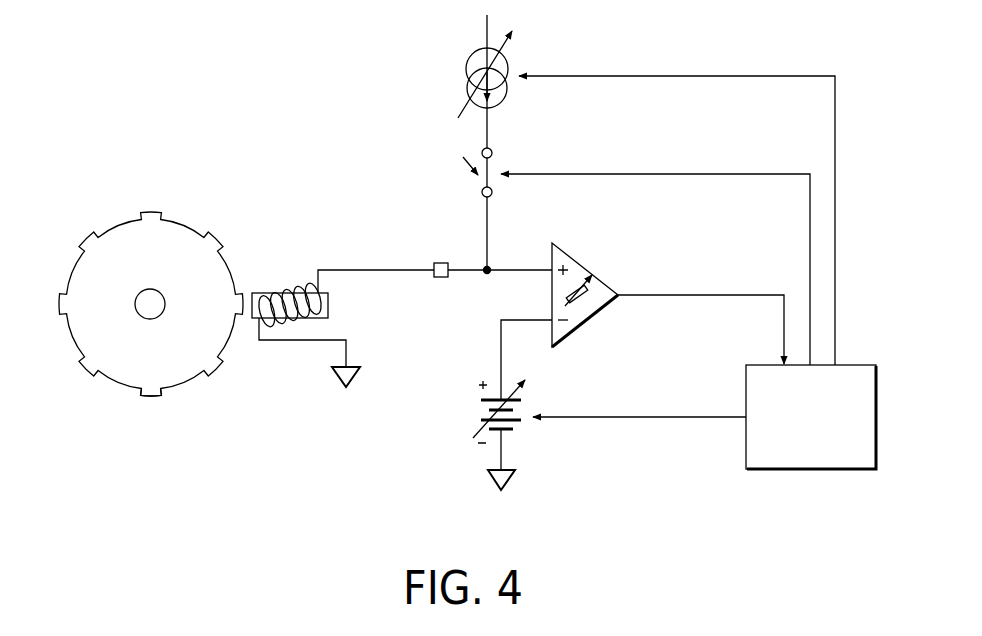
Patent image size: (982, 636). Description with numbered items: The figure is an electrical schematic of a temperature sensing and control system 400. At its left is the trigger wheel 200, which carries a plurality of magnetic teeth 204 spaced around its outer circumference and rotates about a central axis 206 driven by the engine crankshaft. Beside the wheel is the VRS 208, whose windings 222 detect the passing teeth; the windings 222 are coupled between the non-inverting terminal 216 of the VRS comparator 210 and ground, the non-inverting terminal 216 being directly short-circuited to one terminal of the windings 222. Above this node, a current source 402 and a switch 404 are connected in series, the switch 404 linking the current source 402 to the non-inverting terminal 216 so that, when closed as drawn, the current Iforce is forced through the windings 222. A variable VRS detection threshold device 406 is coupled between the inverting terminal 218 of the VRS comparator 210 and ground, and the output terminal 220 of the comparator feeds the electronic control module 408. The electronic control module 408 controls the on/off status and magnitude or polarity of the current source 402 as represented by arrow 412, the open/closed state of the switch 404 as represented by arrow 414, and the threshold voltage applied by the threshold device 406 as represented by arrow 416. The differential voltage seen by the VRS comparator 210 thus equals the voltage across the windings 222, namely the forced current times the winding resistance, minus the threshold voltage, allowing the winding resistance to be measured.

The temperature sensing and control system 400 is at (252, 42).
The trigger wheel 200 is at (183, 221).
The central axis 206 is at (150, 304).
The magnetic teeth 204 is at (152, 396).
The VRS 208 is at (255, 323).
The windings 222 is at (290, 281).
The current source 402 is at (455, 98).
The switch 404 is at (472, 182).
The arrow 412 is at (655, 76).
The arrow 414 is at (655, 174).
The non-inverting terminal 216 is at (543, 265).
The inverting terminal 218 is at (543, 315).
The output terminal 220 is at (624, 288).
The VRS comparator 210 is at (601, 324).
The variable VRS detection threshold device 406 is at (472, 419).
The arrow 416 is at (668, 417).
The electronic control module 408 is at (797, 469).